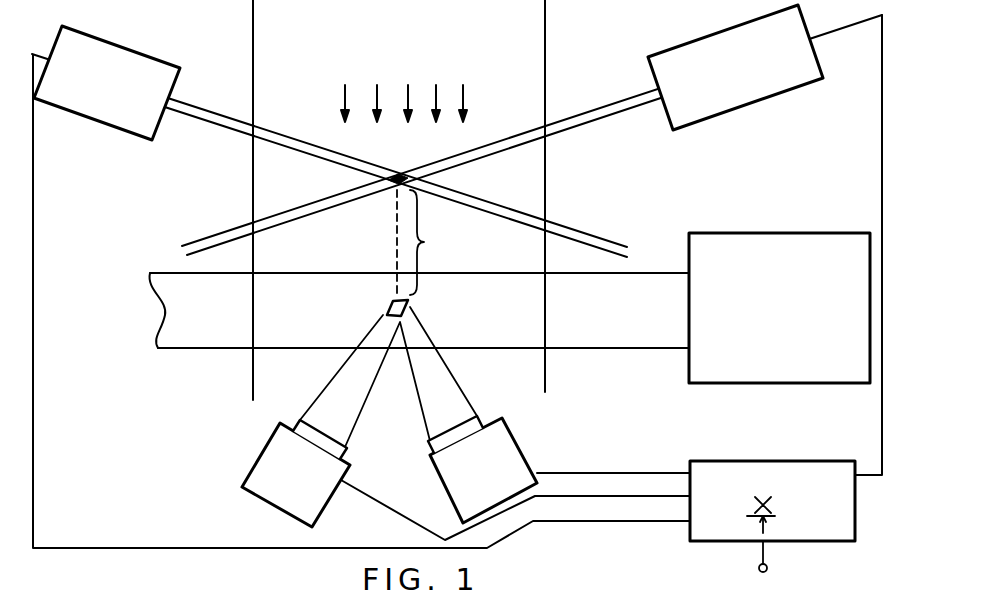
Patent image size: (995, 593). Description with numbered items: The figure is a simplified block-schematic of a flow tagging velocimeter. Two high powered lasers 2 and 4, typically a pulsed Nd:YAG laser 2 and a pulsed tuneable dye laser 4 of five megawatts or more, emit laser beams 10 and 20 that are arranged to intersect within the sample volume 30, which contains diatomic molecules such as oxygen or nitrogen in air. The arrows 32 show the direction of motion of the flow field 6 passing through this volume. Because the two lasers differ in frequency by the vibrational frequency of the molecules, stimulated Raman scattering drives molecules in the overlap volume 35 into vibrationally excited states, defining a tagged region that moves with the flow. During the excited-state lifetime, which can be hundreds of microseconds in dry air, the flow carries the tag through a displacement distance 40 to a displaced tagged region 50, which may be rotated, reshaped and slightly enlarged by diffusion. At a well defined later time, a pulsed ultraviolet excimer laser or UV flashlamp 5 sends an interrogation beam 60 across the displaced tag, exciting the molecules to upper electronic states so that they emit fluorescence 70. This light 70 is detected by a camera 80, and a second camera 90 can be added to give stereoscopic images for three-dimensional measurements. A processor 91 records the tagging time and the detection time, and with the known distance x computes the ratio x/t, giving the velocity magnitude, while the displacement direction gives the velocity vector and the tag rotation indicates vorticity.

The high powered laser 2 is at (700, 118).
The high powered laser 4 is at (113, 123).
The excimer laser 5 is at (783, 384).
The flow field 6 is at (430, 46).
The laser beam 10 is at (219, 108).
The laser beam 20 is at (590, 125).
The sample volume 30 is at (547, 47).
The arrows 32 is at (466, 99).
The overlap volume 35 is at (399, 172).
The displacement distance 40 is at (417, 242).
The displaced tagged region 50 is at (412, 305).
The interrogation beam 60 is at (636, 322).
The emitted light 70 is at (334, 378).
The camera 80 is at (265, 465).
The second camera 90 is at (520, 456).
The processor 91 is at (720, 545).